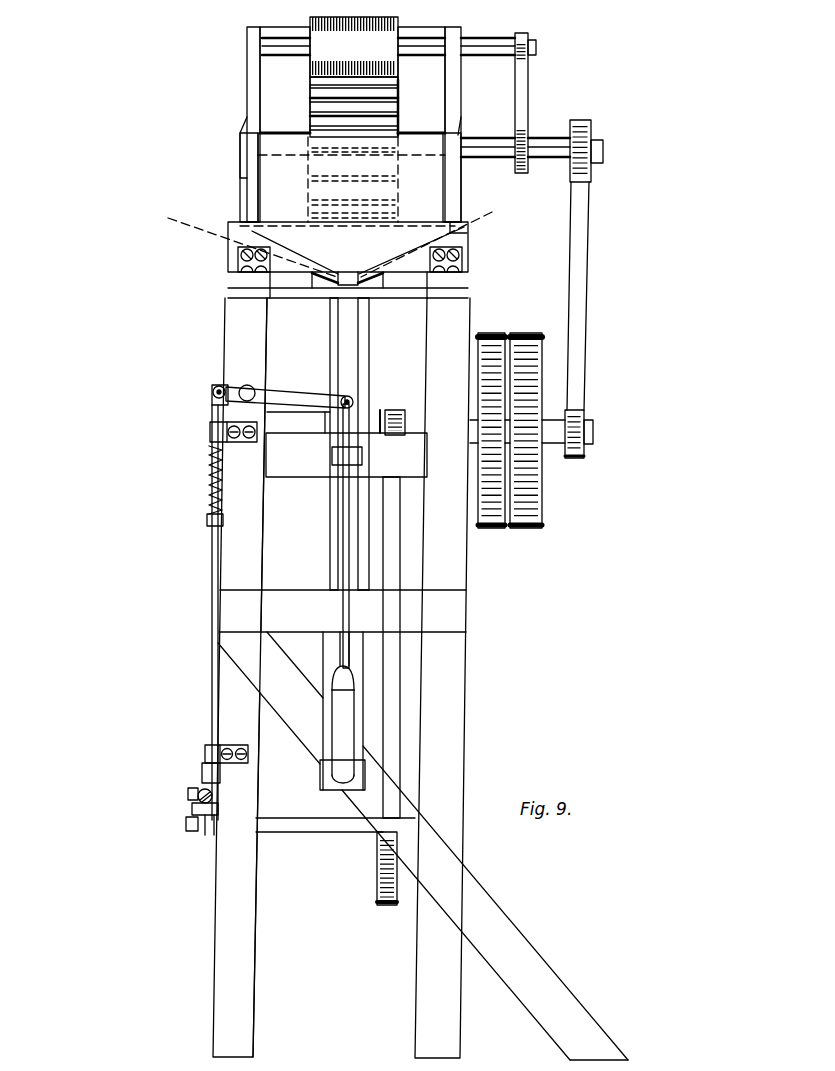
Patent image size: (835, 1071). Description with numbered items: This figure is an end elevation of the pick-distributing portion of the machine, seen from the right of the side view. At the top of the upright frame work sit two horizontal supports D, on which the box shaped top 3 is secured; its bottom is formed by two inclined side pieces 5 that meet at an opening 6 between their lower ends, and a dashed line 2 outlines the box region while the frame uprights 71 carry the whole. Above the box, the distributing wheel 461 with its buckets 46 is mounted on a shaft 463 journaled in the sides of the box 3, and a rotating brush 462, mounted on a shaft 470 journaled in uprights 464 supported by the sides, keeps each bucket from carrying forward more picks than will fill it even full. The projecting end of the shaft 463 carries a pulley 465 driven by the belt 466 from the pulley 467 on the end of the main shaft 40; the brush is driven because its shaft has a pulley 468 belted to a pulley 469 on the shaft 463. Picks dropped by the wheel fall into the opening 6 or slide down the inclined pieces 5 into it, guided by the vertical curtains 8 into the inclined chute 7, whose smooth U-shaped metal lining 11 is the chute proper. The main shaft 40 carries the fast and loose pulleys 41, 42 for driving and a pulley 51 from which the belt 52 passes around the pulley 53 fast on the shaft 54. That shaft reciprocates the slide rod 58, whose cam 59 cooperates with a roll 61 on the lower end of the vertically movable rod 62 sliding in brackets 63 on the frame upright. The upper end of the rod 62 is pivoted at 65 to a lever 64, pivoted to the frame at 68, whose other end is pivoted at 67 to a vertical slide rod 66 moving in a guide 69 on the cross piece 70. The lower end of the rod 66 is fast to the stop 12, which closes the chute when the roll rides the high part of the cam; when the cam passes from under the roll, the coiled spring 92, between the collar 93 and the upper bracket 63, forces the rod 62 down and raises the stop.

The dashed guide line 2 is at (322, 237).
The box shaped top 3 is at (250, 149).
The inclined side pieces 5 is at (288, 253).
The opening 6 is at (348, 273).
The inclined trough shaped chute 7 is at (366, 330).
The vertical curtain 8 is at (334, 347).
The lining 11 is at (336, 781).
The vertically movable stop 12 is at (340, 672).
The main shaft 40 is at (411, 425).
The fast pulley 41 is at (497, 332).
The loose pulley 42 is at (541, 503).
The buckets 46 is at (330, 97).
The pulley 51 is at (380, 418).
The belt 52 is at (403, 573).
The pulley 53 is at (375, 899).
The shaft 54 is at (342, 828).
The slide rod 58 is at (200, 805).
The cam 59 is at (196, 794).
The roll 61 is at (197, 770).
The vertically movable rod 62 is at (214, 670).
The brackets 63 is at (210, 432).
The lever 64 is at (290, 385).
The pivot 65 is at (213, 390).
The vertical slide rod 66 is at (345, 508).
The pivot 67 is at (343, 398).
The frame pivot 68 is at (247, 384).
The guide or way 69 is at (340, 459).
The cross piece 70 is at (277, 468).
The frame post 71 is at (238, 324).
The coiled spring 92 is at (212, 467).
The collar 93 is at (210, 525).
The distributing wheel 461 is at (418, 100).
The rotating brush 462 is at (310, 23).
The shaft 463 is at (550, 162).
The uprights 464 is at (262, 72).
The pulley 465 is at (593, 132).
The belt 466 is at (580, 306).
The pulley 467 is at (588, 418).
The pulley 468 is at (533, 62).
The pulley 469 is at (529, 135).
The shaft 470 is at (446, 55).
The horizontal supports D is at (236, 252).